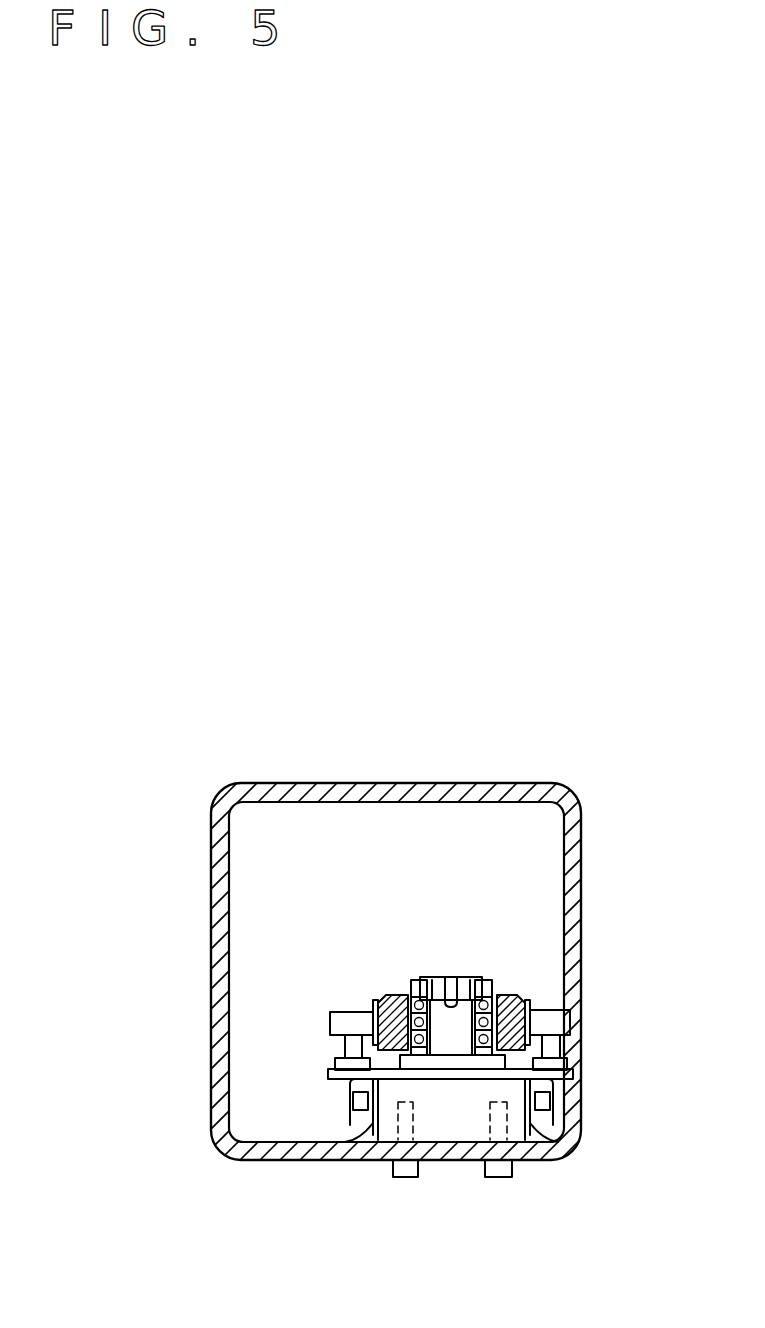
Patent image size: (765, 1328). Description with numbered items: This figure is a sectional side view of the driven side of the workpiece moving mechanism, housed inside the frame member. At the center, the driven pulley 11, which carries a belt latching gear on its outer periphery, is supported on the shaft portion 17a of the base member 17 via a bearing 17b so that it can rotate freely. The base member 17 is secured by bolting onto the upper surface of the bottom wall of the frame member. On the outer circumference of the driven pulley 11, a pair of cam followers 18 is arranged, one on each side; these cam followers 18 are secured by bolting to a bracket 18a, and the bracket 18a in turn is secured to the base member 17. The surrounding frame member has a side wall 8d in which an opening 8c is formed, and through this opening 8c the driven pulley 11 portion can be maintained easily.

The opening 8c is at (583, 1108).
The side wall 8d is at (583, 888).
The driven pulley 11 is at (508, 996).
The base member 17 is at (447, 1120).
The shaft portion 17a is at (461, 978).
The bearing 17b is at (393, 996).
The cam follower 18 is at (332, 1022).
The bracket 18a is at (350, 1140).